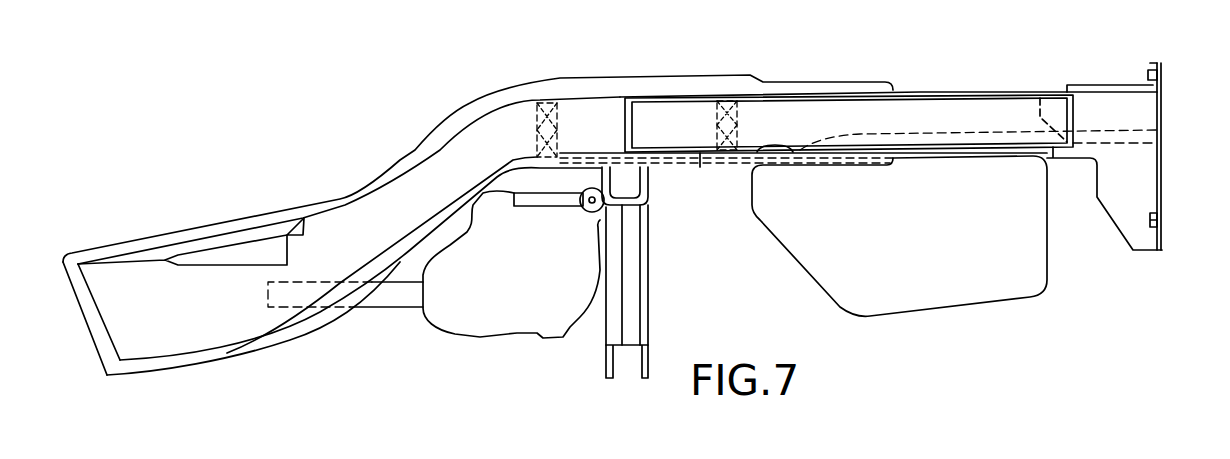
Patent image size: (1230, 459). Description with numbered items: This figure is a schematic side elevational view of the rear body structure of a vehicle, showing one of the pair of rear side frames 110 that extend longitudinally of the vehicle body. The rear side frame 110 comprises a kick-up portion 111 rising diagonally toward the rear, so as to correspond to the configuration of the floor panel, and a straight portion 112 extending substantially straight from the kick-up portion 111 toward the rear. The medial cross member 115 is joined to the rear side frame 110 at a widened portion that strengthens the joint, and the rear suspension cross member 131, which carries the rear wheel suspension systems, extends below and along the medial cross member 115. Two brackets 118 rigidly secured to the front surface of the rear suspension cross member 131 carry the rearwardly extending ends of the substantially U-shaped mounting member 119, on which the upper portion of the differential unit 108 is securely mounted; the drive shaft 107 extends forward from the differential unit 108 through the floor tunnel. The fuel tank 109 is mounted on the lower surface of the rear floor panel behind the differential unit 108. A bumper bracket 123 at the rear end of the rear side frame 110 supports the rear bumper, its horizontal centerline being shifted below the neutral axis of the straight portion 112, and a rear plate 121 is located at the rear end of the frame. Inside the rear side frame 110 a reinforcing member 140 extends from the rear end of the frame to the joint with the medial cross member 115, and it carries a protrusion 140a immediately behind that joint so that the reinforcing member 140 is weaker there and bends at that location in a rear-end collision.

The drive shaft 107 is at (377, 308).
The differential unit 108 is at (490, 335).
The fuel tank 109 is at (947, 308).
The rear side frame 110 is at (903, 92).
The kick-up portion 111 is at (386, 181).
The straight portion 112 is at (788, 82).
The medial cross member 115 is at (527, 123).
The bracket 118 is at (588, 213).
The mounting member 119 is at (527, 207).
The rear plate 121 is at (1153, 111).
The bumper bracket 123 is at (1093, 198).
The rear suspension cross member 131 is at (648, 285).
The reinforcing member 140 is at (938, 154).
The protrusion 140a is at (771, 145).